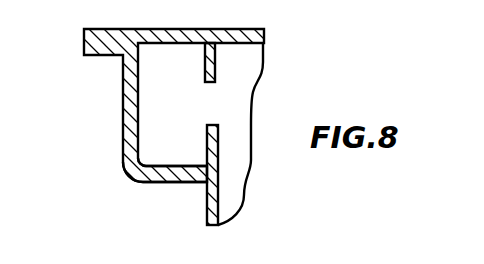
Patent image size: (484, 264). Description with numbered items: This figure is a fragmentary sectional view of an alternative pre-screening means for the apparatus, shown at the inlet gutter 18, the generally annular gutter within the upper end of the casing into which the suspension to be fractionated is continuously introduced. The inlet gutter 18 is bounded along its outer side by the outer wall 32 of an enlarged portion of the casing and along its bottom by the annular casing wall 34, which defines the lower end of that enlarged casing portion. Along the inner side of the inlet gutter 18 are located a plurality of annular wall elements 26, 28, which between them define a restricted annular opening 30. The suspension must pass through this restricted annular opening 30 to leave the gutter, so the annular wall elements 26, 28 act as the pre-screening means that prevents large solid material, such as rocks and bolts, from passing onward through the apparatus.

The inlet gutter 18 is at (144, 159).
The annular wall element 26 is at (215, 71).
The annular wall element 28 is at (218, 150).
The restricted annular opening 30 is at (210, 102).
The outer wall 32 is at (125, 93).
The annular casing wall 34 is at (179, 182).